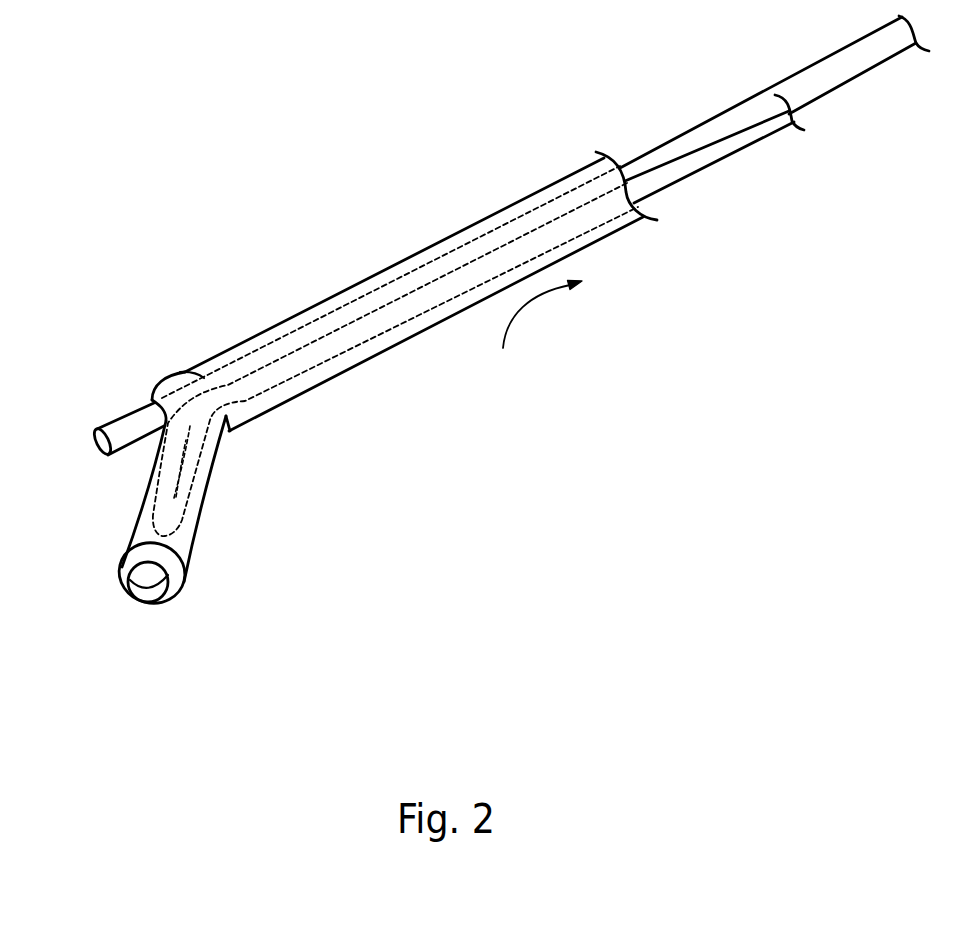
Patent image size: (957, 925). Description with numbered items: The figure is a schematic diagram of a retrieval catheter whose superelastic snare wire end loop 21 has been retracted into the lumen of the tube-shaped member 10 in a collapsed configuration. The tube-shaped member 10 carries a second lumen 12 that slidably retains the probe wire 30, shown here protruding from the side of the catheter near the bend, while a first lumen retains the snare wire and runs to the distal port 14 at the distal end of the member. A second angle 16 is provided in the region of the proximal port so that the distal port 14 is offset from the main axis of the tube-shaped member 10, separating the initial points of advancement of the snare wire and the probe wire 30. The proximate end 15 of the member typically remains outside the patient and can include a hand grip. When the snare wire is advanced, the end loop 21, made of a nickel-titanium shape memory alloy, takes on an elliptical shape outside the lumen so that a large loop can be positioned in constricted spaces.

The tube-shaped member 10 is at (325, 299).
The second lumen 12 is at (152, 400).
The distal port 14 is at (183, 587).
The proximate end 15 is at (537, 332).
The second angle 16 is at (228, 430).
The end loop 21 is at (181, 476).
The probe wire 30 is at (120, 413).